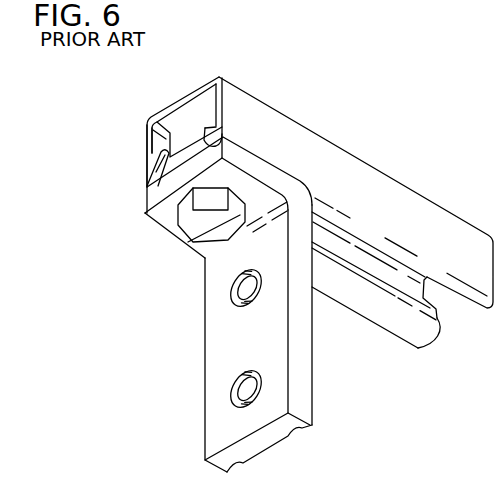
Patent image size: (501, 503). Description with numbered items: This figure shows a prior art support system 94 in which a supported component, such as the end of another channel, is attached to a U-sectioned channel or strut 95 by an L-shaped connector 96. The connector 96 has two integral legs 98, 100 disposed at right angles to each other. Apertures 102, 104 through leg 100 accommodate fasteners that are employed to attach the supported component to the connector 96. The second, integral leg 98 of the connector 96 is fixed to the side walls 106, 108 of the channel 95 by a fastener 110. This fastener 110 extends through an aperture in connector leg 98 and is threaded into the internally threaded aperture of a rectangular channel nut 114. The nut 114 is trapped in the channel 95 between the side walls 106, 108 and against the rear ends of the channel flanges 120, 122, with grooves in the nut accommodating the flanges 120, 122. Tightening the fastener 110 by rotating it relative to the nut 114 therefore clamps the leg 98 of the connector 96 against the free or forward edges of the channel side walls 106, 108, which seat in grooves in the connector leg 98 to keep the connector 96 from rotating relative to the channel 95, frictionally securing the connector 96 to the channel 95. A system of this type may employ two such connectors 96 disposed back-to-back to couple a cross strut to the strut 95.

The support system 94 is at (119, 218).
The channel or strut 95 is at (206, 60).
The L-shaped connector 96 is at (197, 357).
The connector leg 98 is at (271, 161).
The connector leg 100 is at (311, 365).
The aperture 102 is at (237, 290).
The aperture 104 is at (236, 388).
The side wall 106 is at (143, 133).
The side wall 108 is at (227, 97).
The fastener 110 is at (229, 213).
The rectangular channel nut 114 is at (180, 107).
The channel flange 120 is at (158, 161).
The channel flange 122 is at (214, 132).